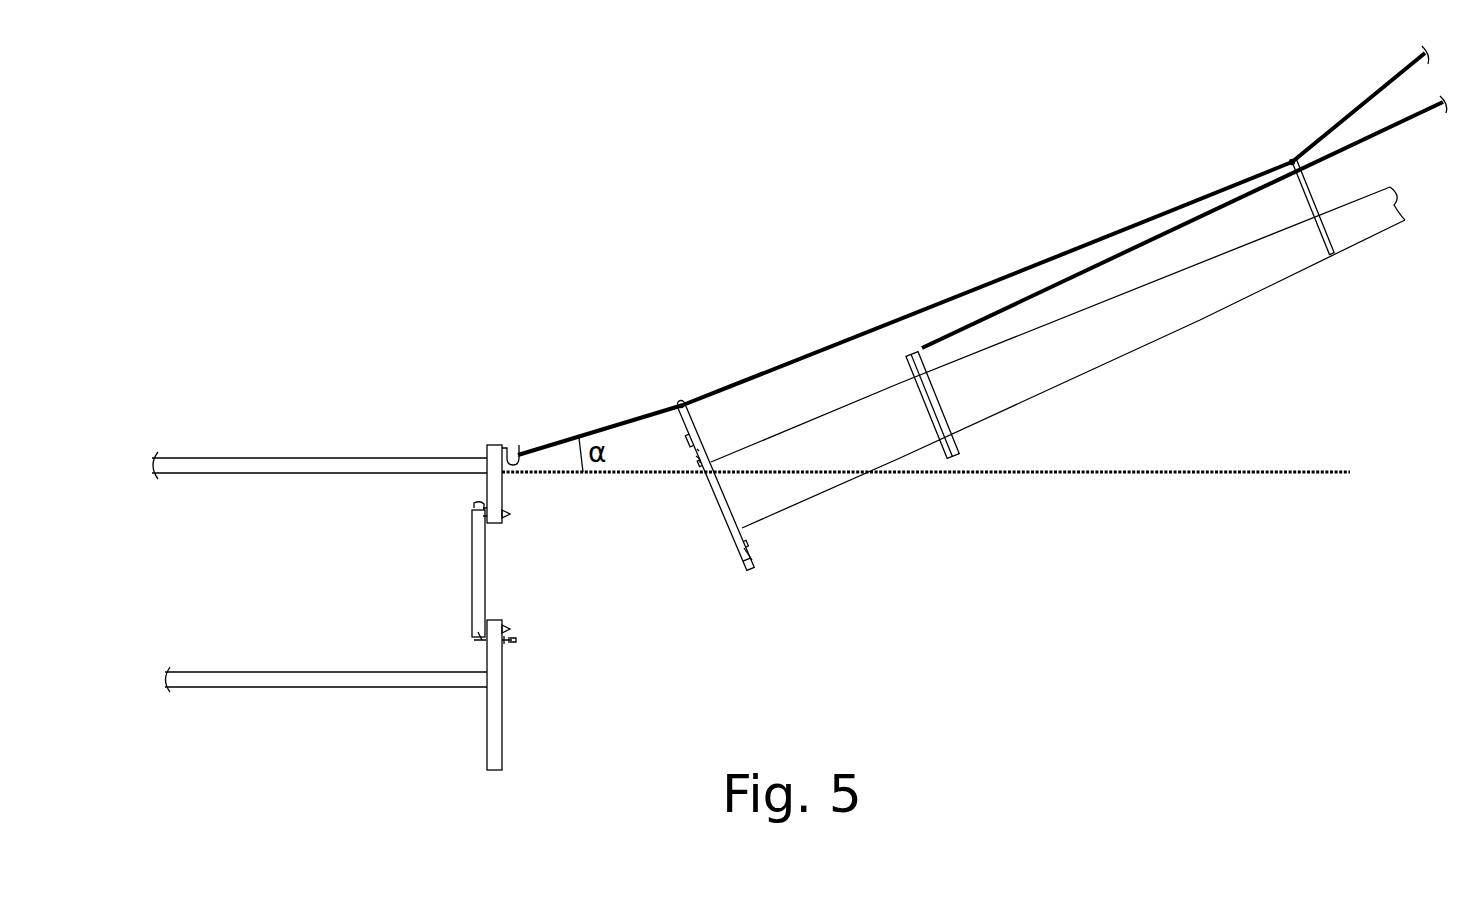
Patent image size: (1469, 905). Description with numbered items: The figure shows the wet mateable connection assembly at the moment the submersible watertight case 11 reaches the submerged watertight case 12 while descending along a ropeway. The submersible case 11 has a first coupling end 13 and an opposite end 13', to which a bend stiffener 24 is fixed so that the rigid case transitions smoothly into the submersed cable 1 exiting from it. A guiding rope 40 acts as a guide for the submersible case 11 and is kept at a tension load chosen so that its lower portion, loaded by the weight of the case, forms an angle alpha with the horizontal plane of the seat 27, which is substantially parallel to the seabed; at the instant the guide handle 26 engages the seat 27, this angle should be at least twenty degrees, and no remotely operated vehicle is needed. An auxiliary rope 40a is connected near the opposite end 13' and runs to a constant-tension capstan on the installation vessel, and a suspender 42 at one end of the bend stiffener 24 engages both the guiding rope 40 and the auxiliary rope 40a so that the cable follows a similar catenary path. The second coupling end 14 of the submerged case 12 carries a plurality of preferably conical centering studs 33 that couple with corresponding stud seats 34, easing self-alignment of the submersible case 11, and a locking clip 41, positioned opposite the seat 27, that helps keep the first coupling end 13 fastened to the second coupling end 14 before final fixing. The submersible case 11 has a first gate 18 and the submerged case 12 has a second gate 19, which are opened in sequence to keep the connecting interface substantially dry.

The submersed cable 1 is at (1370, 210).
The submersible watertight case 11 is at (830, 458).
The submerged watertight case 12 is at (322, 680).
The first coupling end 13 is at (779, 583).
The opposite end 13' is at (972, 442).
The second coupling end 14 is at (493, 673).
The first gate 18 is at (717, 497).
The second gate 19 is at (478, 545).
The bend stiffener 24 is at (1232, 272).
The guide handle 26 is at (680, 405).
The seat 27 is at (516, 455).
The centering studs 33 is at (508, 514).
The stud seats 34 is at (686, 452).
The guiding rope 40 is at (775, 370).
The auxiliary rope 40a is at (1168, 238).
The locking clip 41 is at (512, 647).
The suspender 42 is at (1312, 203).